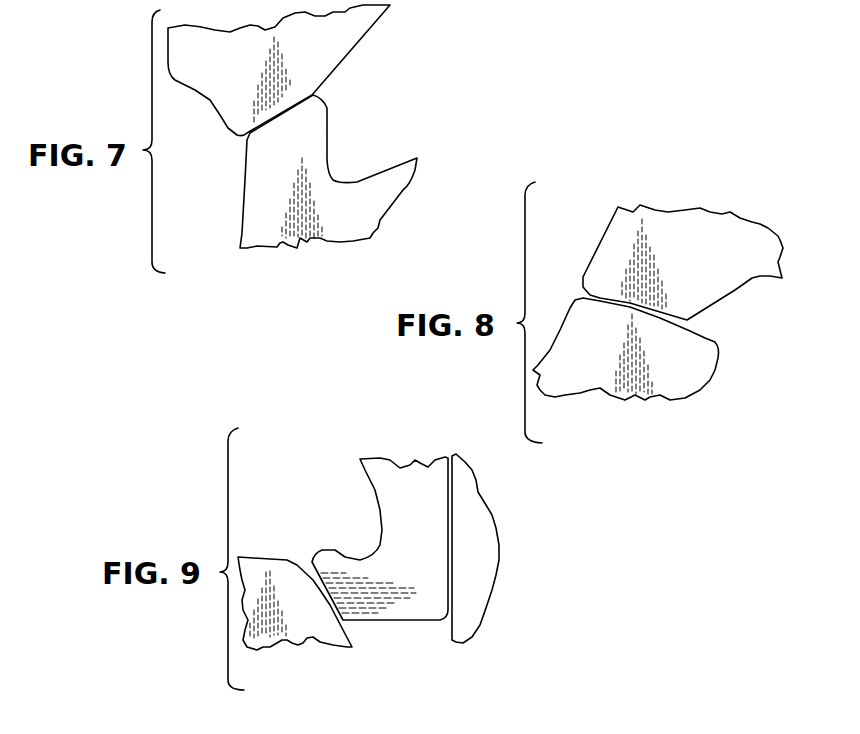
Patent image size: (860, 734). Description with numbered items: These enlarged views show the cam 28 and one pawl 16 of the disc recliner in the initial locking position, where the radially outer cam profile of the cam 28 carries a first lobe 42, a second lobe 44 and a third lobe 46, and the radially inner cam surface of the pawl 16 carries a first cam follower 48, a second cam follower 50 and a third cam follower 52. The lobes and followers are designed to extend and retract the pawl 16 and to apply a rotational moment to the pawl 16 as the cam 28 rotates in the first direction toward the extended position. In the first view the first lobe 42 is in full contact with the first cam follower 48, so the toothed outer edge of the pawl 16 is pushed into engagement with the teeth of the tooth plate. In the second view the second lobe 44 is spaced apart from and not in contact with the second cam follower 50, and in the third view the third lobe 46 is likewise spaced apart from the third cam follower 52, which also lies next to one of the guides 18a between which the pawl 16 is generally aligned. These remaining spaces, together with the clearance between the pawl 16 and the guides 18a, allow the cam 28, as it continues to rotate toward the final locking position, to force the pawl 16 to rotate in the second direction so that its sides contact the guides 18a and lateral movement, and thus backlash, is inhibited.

In FIG. 7, the pawl 16 is at (318, 25).
In FIG. 8, the pawl 16 is at (758, 243).
In FIG. 9, the pawl 16 is at (414, 478).
In FIG. 7, the cam 28 is at (375, 200).
In FIG. 8, the cam 28 is at (673, 380).
In FIG. 7, the first lobe 42 is at (283, 122).
In FIG. 8, the second lobe 44 is at (617, 317).
In FIG. 9, the third lobe 46 is at (311, 600).
In FIG. 7, the first cam follower 48 is at (272, 107).
In FIG. 8, the second cam follower 50 is at (647, 298).
In FIG. 9, the third cam follower 52 is at (347, 592).
In FIG. 9, the guide 18a is at (488, 547).